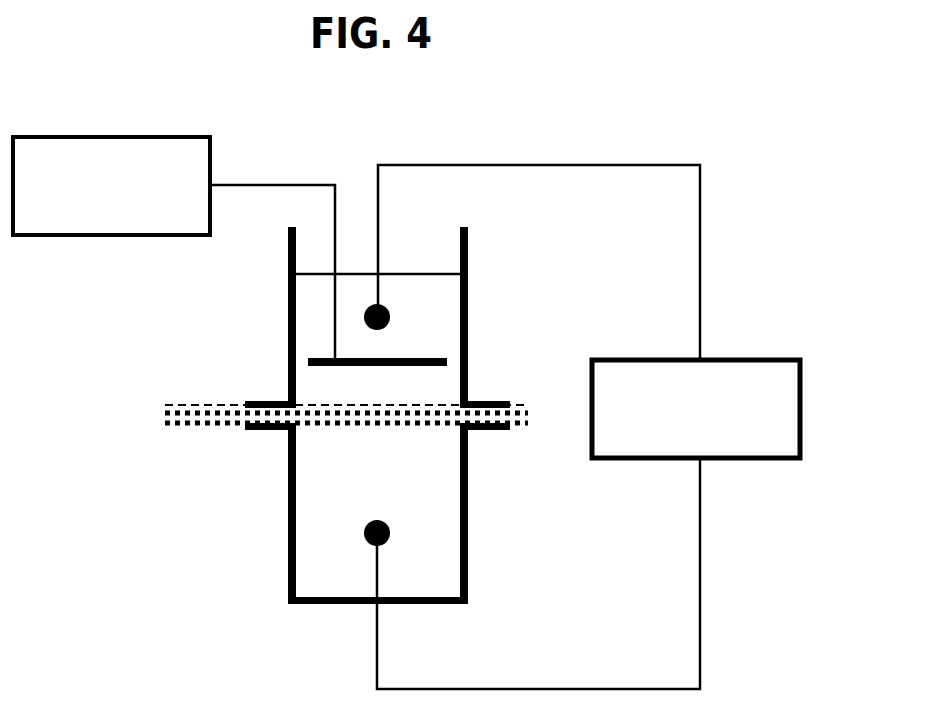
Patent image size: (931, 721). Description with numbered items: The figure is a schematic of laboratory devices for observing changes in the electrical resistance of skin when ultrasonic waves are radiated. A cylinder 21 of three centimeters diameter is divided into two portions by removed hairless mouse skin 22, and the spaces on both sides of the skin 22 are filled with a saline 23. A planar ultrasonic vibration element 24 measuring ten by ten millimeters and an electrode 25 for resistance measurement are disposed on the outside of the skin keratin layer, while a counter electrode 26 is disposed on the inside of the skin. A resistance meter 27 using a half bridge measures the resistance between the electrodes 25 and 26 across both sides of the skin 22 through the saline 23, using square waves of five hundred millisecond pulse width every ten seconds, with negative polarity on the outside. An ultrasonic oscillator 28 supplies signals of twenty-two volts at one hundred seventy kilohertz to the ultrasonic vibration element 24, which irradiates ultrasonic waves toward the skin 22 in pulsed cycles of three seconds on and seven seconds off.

The cylinder 21 is at (290, 537).
The skin 22 is at (207, 423).
The saline 23 is at (443, 298).
The planar ultrasonic vibration element 24 is at (430, 358).
The electrode 25 is at (382, 305).
The counter electrode 26 is at (370, 545).
The resistance meter 27 is at (750, 362).
The ultrasonic oscillator 28 is at (125, 137).